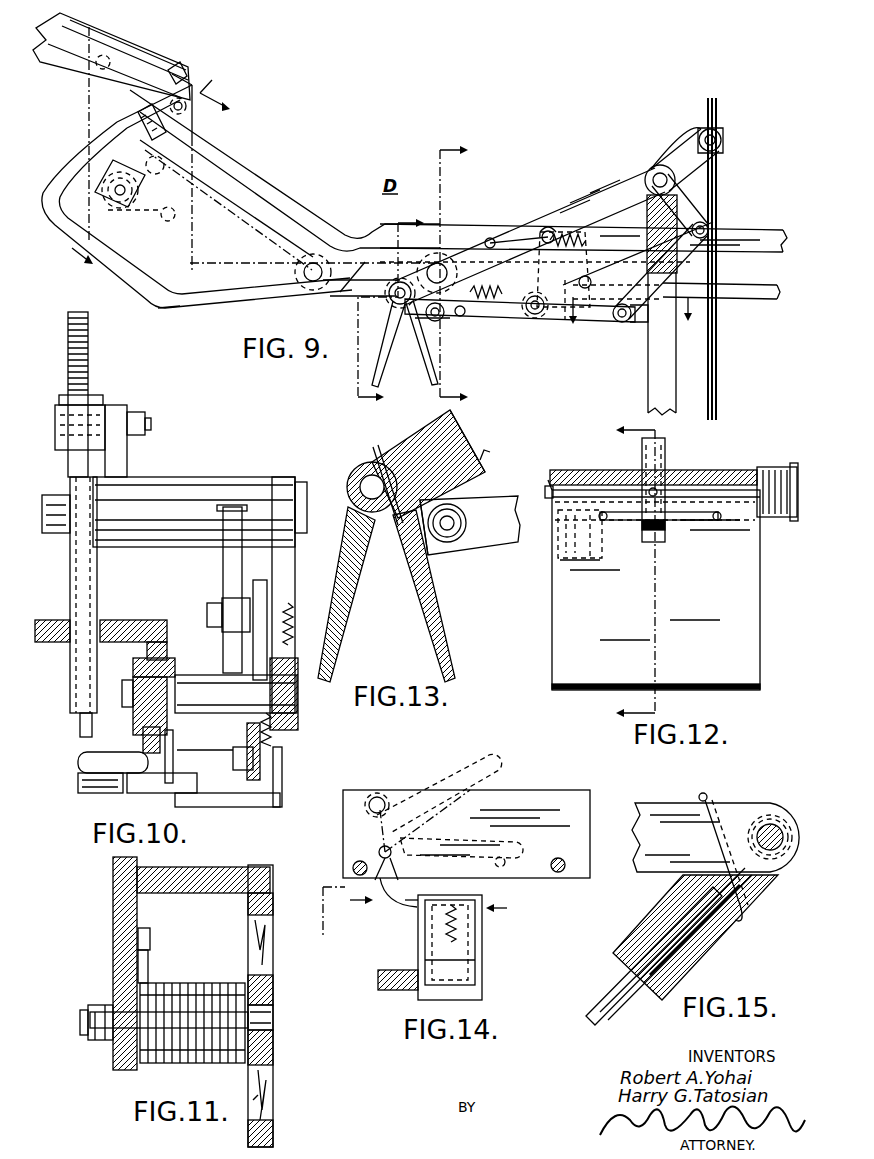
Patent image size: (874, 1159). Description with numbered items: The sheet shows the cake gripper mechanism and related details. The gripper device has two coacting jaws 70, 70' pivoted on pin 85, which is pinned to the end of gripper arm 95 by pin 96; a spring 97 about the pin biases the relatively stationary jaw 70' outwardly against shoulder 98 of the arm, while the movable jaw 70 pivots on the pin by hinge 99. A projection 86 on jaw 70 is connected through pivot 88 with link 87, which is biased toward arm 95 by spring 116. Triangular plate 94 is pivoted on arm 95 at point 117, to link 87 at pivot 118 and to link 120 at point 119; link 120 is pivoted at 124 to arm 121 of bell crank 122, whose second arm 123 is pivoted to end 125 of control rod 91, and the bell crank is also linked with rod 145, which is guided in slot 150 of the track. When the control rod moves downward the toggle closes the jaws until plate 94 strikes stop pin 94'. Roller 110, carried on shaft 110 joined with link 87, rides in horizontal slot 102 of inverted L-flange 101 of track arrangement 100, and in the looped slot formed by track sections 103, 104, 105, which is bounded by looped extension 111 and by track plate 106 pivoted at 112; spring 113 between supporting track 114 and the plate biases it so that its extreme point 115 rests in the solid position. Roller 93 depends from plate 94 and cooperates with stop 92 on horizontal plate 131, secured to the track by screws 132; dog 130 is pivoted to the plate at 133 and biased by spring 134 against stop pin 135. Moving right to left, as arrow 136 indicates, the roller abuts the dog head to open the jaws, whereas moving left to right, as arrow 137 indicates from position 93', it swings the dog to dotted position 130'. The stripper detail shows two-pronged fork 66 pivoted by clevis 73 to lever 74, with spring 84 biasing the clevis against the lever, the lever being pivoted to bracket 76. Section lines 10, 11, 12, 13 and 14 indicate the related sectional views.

In FIG. 9, the bracket 76 is at (60, 33).
In FIG. 9, the supporting track 114 is at (92, 108).
In FIG. 11, the supporting track 114 is at (113, 906).
In FIG. 9, the section line 11— 11 is at (161, 156).
In FIG. 9, the spring 113 is at (100, 138).
In FIG. 11, the spring 113 is at (176, 985).
In FIG. 9, the track section 104 is at (95, 165).
In FIG. 9, the pivot point 112 is at (98, 218).
In FIG. 11, the pivot point 112 is at (273, 1020).
In FIG. 9, the looped extension 111 is at (52, 206).
In FIG. 9, the track arrangement 100 is at (287, 206).
In FIG. 9, the track section 103 is at (228, 202).
In FIG. 11, the track section 103 is at (262, 922).
In FIG. 9, the track section 105 is at (212, 292).
In FIG. 11, the track section 105 is at (262, 1106).
In FIG. 9, the extreme point 115 is at (310, 290).
In FIG. 9, the horizontal slot 102 is at (358, 292).
In FIG. 9, the pivot pin 85 is at (392, 302).
In FIG. 13, the pivot pin 85 is at (356, 478).
In FIG. 12, the pivot pin 85 is at (548, 482).
In FIG. 9, the gripper jaw 70' is at (389, 344).
In FIG. 13, the gripper jaw 70' is at (353, 594).
In FIG. 12, the gripper jaw 70' is at (671, 590).
In FIG. 9, the gripper jaw 70 is at (438, 342).
In FIG. 13, the gripper jaw 70 is at (428, 596).
In FIG. 9, the section line 12— 12 is at (391, 307).
In FIG. 9, the section line 10— 10 is at (464, 275).
In FIG. 9, the roller 110 is at (440, 262).
In FIG. 10, the roller 110 is at (180, 675).
In FIG. 9, the stop pin 94' is at (500, 227).
In FIG. 9, the gripper arm 95 is at (624, 185).
In FIG. 10, the gripper arm 95 is at (288, 572).
In FIG. 13, the gripper arm 95 is at (466, 455).
In FIG. 12, the gripper arm 95 is at (662, 452).
In FIG. 9, the bell crank 122 is at (667, 163).
In FIG. 10, the bell crank 122 is at (185, 476).
In FIG. 9, the second arm 123 is at (698, 134).
In FIG. 10, the second arm 123 is at (116, 460).
In FIG. 9, the end of actuating rod 125 is at (724, 136).
In FIG. 10, the end of actuating rod 125 is at (140, 422).
In FIG. 9, the arm 121 is at (702, 196).
In FIG. 10, the arm 121 is at (226, 566).
In FIG. 9, the pivot 124 is at (708, 224).
In FIG. 9, the link 120 is at (683, 254).
In FIG. 10, the link 120 is at (240, 637).
In FIG. 9, the inverted L-flange 101 is at (782, 220).
In FIG. 10, the inverted L-flange 101 is at (120, 620).
In FIG. 11, the inverted L-flange 101 is at (195, 893).
In FIG. 9, the pivot point 117 is at (548, 230).
In FIG. 9, the pivot point 119 is at (592, 252).
In FIG. 9, the spring 116 is at (502, 318).
In FIG. 10, the spring 116 is at (250, 738).
In FIG. 9, the pivot 88 is at (440, 318).
In FIG. 13, the pivot 88 is at (468, 498).
In FIG. 12, the pivot 88 is at (552, 522).
In FIG. 9, the projection 86 is at (428, 320).
In FIG. 13, the projection 86 is at (449, 542).
In FIG. 12, the projection 86 is at (600, 556).
In FIG. 9, the link 87 is at (500, 300).
In FIG. 10, the link 87 is at (298, 715).
In FIG. 13, the link 87 is at (500, 540).
In FIG. 12, the link 87 is at (560, 560).
In FIG. 9, the pivot 118 is at (538, 316).
In FIG. 9, the triangular plate 94 is at (571, 316).
In FIG. 10, the triangular plate 94 is at (250, 693).
In FIG. 14, the triangular plate 94 is at (398, 991).
In FIG. 9, the section line 14— 14 is at (636, 320).
In FIG. 9, the dog 130 is at (598, 303).
In FIG. 10, the dog 130 is at (162, 799).
In FIG. 14, the dog 130 is at (397, 901).
In FIG. 9, the roller 93 is at (619, 325).
In FIG. 10, the roller 93 is at (243, 771).
In FIG. 14, the roller 93 is at (513, 947).
In FIG. 9, the stop 92 is at (641, 320).
In FIG. 10, the stop 92 is at (174, 752).
In FIG. 14, the stop 92 is at (400, 905).
In FIG. 9, the horizontal plate 131 is at (677, 340).
In FIG. 10, the horizontal plate 131 is at (78, 760).
In FIG. 14, the horizontal plate 131 is at (553, 795).
In FIG. 9, the rod 145 is at (654, 374).
In FIG. 10, the rod 145 is at (78, 663).
In FIG. 9, the control rod 91 is at (718, 318).
In FIG. 10, the control rod 91 is at (68, 343).
In FIG. 10, the slot 150 is at (62, 620).
In FIG. 10, the screws 132 is at (143, 742).
In FIG. 14, the screws 132 is at (352, 868).
In FIG. 10, the spring 134 is at (115, 790).
In FIG. 14, the spring 134 is at (385, 800).
In FIG. 13, the shoulder 98 is at (360, 492).
In FIG. 12, the shoulder 98 is at (658, 488).
In FIG. 13, the pin 96 is at (375, 450).
In FIG. 12, the section line 13— 13 is at (623, 573).
In FIG. 12, the hinge 99 is at (612, 470).
In FIG. 12, the spring 97 is at (778, 468).
In FIG. 14, the pivot 133 is at (378, 852).
In FIG. 14, the dotted position of dog 130' is at (456, 798).
In FIG. 14, the stop pin 135 is at (523, 862).
In FIG. 14, the arrow 136 is at (492, 923).
In FIG. 14, the arrow 137 is at (348, 912).
In FIG. 14, the dotted position of roller 93' is at (305, 929).
In FIG. 15, the lever 74 is at (658, 815).
In FIG. 15, the spring 84 is at (712, 800).
In FIG. 15, the clevis 73 is at (750, 892).
In FIG. 15, the two-pronged fork 66 is at (606, 1008).
In FIG. 11, the track plate 106 is at (273, 978).